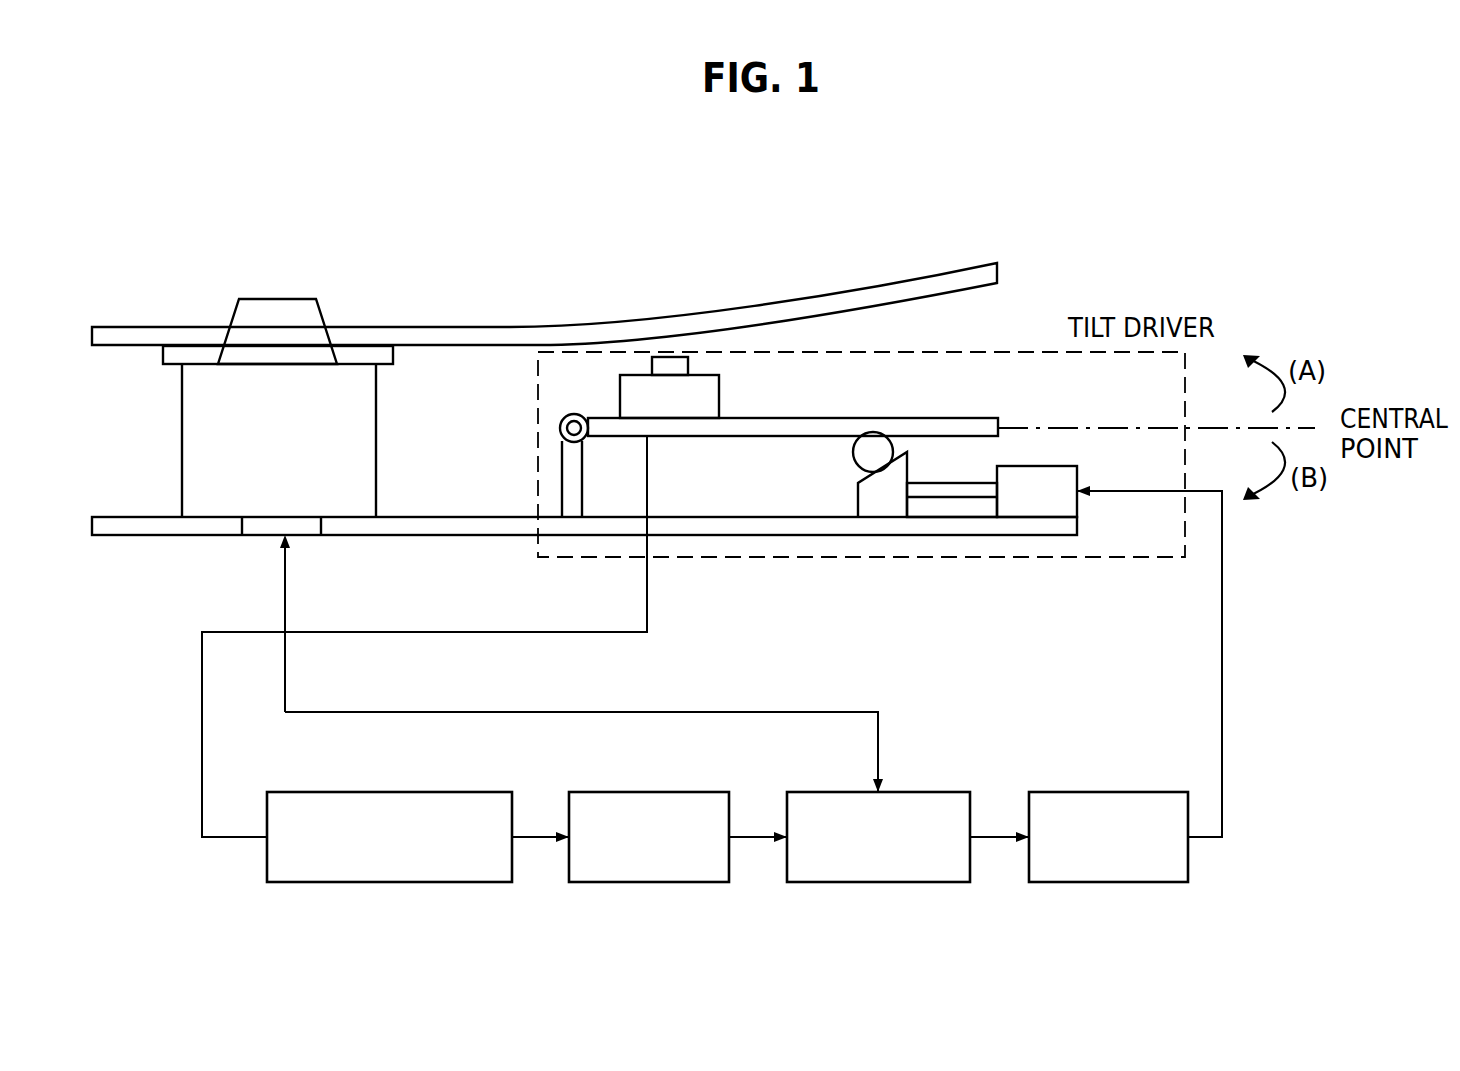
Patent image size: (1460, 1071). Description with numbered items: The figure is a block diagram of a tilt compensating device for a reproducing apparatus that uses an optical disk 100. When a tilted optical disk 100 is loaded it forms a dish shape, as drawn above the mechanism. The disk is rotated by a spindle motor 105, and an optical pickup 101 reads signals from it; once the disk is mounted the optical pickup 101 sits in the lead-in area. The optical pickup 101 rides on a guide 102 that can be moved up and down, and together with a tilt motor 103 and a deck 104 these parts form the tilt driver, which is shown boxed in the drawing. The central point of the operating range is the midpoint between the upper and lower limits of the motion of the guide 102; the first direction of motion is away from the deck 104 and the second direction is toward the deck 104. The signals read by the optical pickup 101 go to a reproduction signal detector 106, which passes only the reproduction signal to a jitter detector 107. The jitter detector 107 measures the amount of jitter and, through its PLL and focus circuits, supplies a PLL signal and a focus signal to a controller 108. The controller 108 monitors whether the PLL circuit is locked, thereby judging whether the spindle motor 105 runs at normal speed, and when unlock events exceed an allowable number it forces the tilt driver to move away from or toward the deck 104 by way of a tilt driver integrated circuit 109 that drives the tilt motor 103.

The optical disk 100 is at (800, 298).
The optical pickup 101 is at (672, 357).
The guide 102 is at (913, 418).
The tilt motor 103 is at (1078, 478).
The deck 104 is at (898, 525).
The spindle motor 105 is at (302, 536).
The reproduction signal detector 106 is at (392, 792).
The jitter detector 107 is at (653, 792).
The controller 108 is at (900, 792).
The tilt driver integrated circuit (IC) 109 is at (1112, 792).